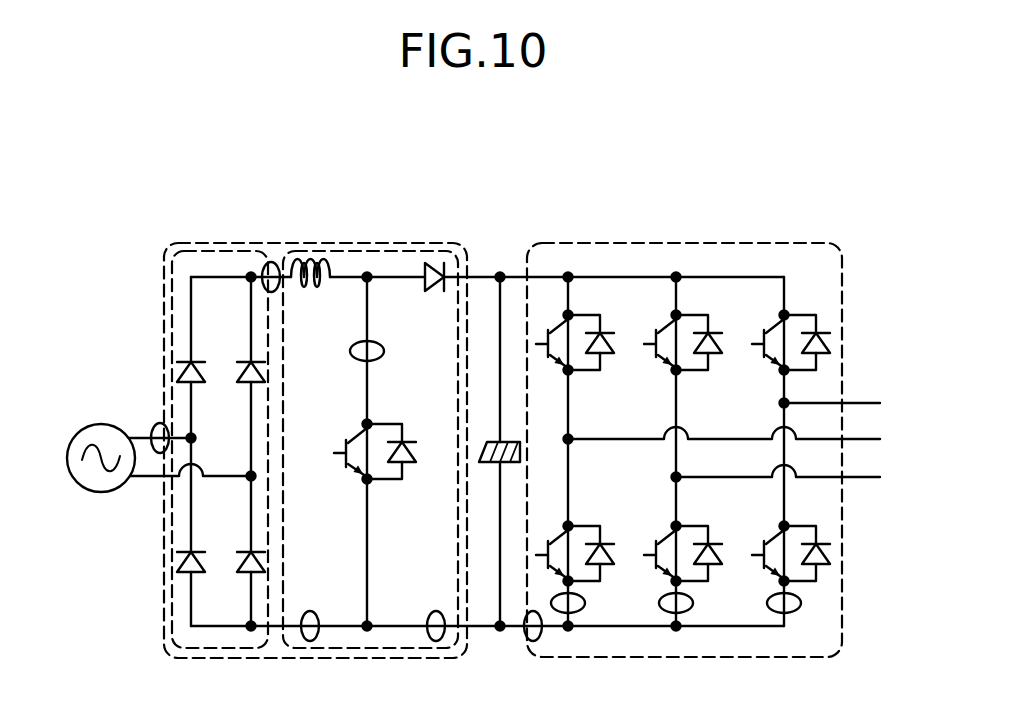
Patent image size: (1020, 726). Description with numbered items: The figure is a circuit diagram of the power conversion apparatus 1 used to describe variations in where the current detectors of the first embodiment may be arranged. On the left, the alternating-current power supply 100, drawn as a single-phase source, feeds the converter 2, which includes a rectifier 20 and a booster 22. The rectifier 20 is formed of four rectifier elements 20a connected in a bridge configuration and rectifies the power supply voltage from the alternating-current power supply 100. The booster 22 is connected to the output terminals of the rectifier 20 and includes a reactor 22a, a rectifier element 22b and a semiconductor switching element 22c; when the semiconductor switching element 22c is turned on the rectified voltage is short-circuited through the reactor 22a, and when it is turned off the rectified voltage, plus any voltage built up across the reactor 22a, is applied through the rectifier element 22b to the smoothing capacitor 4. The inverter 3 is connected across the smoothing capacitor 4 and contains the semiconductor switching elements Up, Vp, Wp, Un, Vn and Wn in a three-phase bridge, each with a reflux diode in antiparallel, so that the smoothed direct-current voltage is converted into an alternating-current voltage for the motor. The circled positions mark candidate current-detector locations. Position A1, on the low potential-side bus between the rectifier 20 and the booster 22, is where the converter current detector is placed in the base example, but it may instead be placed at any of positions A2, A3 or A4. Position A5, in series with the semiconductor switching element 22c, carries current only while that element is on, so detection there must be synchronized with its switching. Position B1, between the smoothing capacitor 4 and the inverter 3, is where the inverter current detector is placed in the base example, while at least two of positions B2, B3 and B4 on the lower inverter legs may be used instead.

The power conversion device 1 is at (493, 149).
The converter 2 is at (340, 243).
The inverter 3 is at (704, 243).
The smoothing capacitor 4 is at (482, 441).
The rectifier 20 is at (192, 420).
The rectifier element 20a is at (172, 352).
The booster 22 is at (427, 243).
The reactor 22a is at (310, 292).
The rectifier element 22b is at (433, 293).
The semiconductor switching element 22c is at (394, 490).
The alternating-current power supply 100 is at (98, 424).
The position A1 is at (311, 642).
The position A2 is at (158, 423).
The position A3 is at (272, 262).
The position A4 is at (437, 642).
The position A5 is at (379, 341).
The position B1 is at (534, 642).
The position B2 is at (579, 611).
The position B3 is at (687, 611).
The position B4 is at (795, 611).
The semiconductor switching element Up is at (544, 365).
The semiconductor switching element Vp is at (652, 365).
The semiconductor switching element Wp is at (760, 365).
The semiconductor switching element Un is at (546, 526).
The semiconductor switching element Vn is at (654, 526).
The semiconductor switching element Wn is at (762, 526).